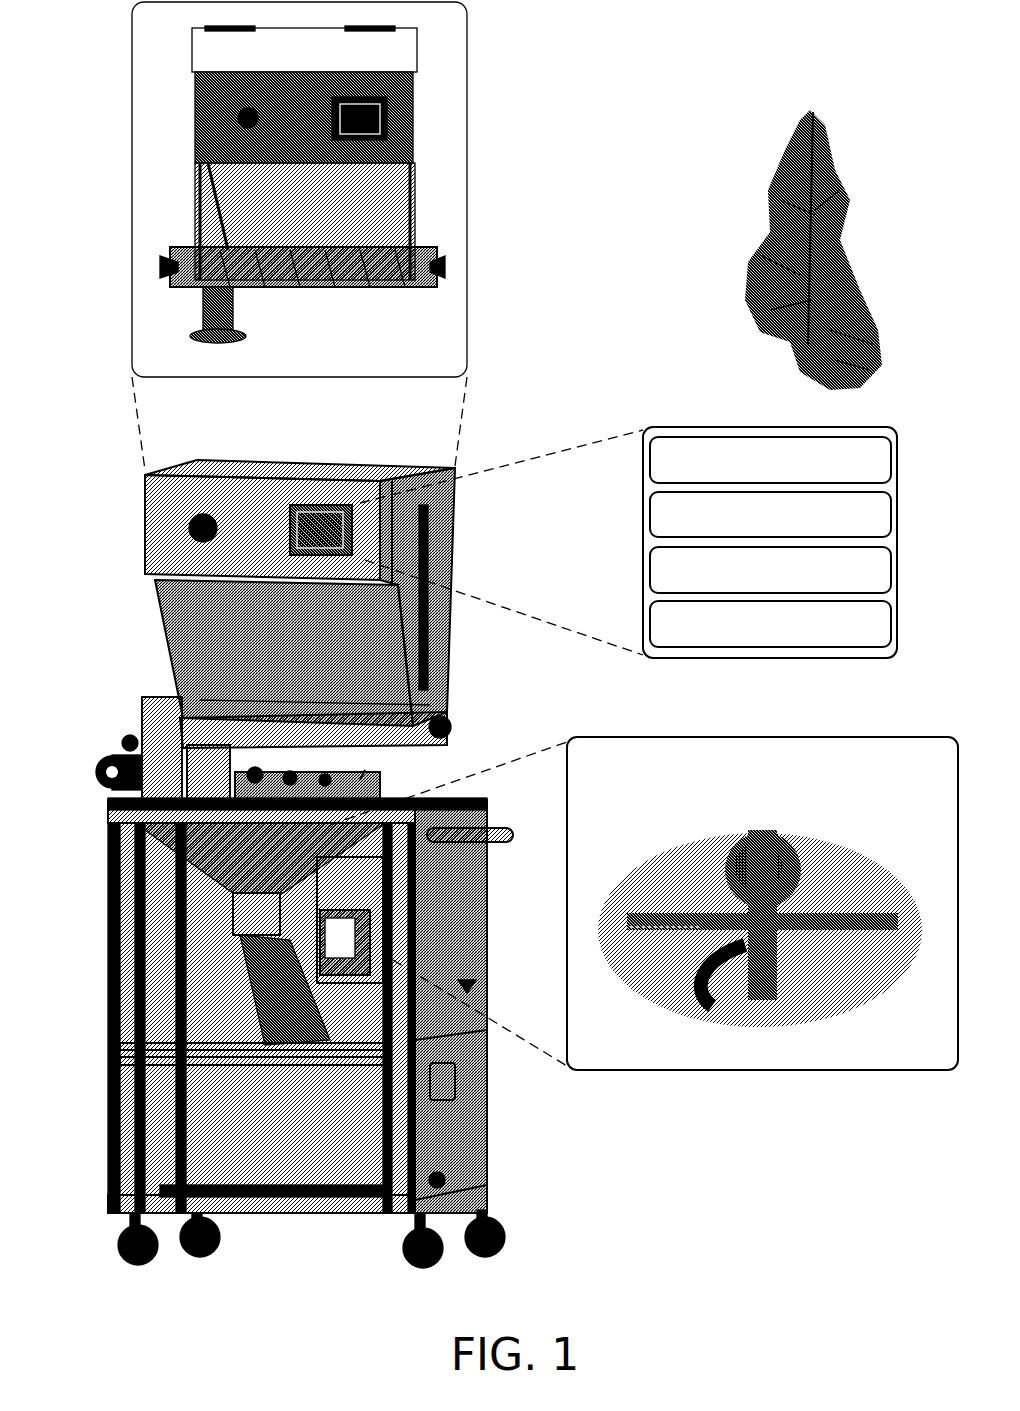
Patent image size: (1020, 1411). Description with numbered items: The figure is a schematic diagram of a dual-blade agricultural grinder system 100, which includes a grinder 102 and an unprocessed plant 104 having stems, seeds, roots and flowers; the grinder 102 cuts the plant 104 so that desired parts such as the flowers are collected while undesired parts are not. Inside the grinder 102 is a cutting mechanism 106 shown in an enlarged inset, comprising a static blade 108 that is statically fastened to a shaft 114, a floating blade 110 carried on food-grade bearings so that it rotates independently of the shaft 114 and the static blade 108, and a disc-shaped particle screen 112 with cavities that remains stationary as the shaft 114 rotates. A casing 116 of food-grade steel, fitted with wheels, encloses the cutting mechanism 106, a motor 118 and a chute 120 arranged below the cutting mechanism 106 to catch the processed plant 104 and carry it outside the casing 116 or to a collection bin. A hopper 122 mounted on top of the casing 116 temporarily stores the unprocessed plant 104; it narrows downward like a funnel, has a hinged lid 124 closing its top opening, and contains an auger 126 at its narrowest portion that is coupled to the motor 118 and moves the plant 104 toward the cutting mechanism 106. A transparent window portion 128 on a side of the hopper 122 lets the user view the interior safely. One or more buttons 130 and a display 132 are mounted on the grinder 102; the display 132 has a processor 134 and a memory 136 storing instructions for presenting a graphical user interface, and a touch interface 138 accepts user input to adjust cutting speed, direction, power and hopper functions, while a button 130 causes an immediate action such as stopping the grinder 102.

The dual-blade agricultural grinder system 100 is at (710, 67).
The grinder 102 is at (313, 576).
The unprocessed plant 104 is at (760, 200).
The cutting mechanism 106 is at (762, 903).
The static blade 108 is at (697, 912).
The floating blade 110 is at (705, 975).
The particle screen 112 is at (848, 890).
The shaft 114 is at (765, 840).
The casing 116 is at (489, 1005).
The motor 118 is at (489, 967).
The chute 120 is at (108, 998).
The hopper 122 is at (249, 604).
The hinged lid 124 is at (299, 236).
The auger 126 is at (288, 273).
The transparent window portion 128 is at (430, 544).
The button 130 is at (232, 100).
The display 132 is at (770, 460).
The processor 134 is at (770, 514).
The memory 136 is at (770, 570).
The touch interface 138 is at (770, 624).